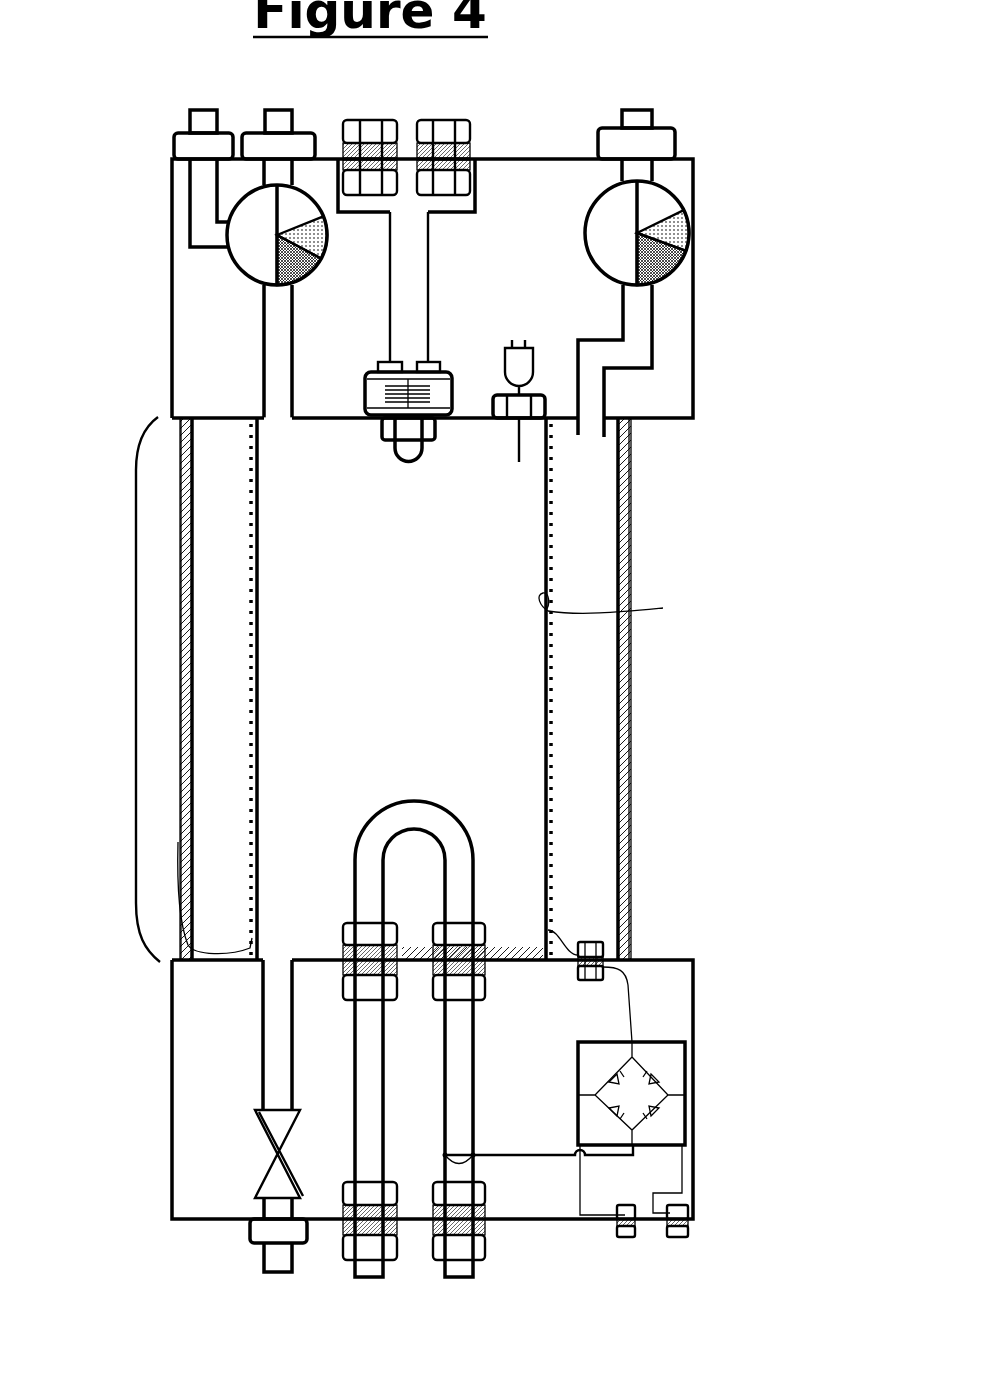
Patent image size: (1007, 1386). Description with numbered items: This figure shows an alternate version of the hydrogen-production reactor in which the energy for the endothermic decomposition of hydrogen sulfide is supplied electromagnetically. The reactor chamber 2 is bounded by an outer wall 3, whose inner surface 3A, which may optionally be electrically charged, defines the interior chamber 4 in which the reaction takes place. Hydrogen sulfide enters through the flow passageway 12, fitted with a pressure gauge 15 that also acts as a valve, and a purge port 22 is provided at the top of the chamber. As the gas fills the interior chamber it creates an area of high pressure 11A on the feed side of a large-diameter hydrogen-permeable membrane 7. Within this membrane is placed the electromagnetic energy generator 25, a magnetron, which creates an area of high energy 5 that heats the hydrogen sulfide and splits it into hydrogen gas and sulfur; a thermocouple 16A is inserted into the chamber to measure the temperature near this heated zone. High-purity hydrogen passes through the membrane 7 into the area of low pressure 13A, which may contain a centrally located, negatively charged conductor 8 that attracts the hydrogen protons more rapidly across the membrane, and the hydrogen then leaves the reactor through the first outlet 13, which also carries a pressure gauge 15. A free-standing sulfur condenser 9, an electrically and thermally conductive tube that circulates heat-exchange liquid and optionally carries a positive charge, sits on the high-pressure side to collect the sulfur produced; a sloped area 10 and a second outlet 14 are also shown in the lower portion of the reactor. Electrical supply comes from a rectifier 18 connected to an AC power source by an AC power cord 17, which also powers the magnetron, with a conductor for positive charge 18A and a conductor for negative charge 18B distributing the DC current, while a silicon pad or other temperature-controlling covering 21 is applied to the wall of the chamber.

The reactor chamber 2 is at (136, 690).
The outer wall 3 is at (192, 615).
The inner surface of outer wall 3A is at (192, 690).
The interior chamber 4 is at (523, 520).
The heating element or area of high energy 5 is at (407, 468).
The membrane 7 is at (183, 862).
The negatively charged conductor inside membrane 8 is at (552, 663).
The sulfur condenser 9 is at (458, 882).
The sloped area 10 is at (522, 945).
The area of high pressure 11A is at (278, 422).
The flow passageway 12 is at (275, 110).
The first outlet 13 is at (637, 107).
The area of low pressure 13A is at (227, 807).
The second outlet 14 is at (270, 1272).
The pressure gauge 15 is at (242, 247).
The thermocouple 16A is at (518, 345).
The AC power cord 17 is at (438, 118).
The rectifier 18 is at (675, 1115).
The conductor for positive charge 18A is at (548, 1156).
The conductor for negative charge 18B is at (628, 985).
The silicon pad or other temperature controlling covering 21 is at (627, 743).
The purge port 22 is at (200, 132).
The electromagnetic energy generator 25 is at (440, 393).